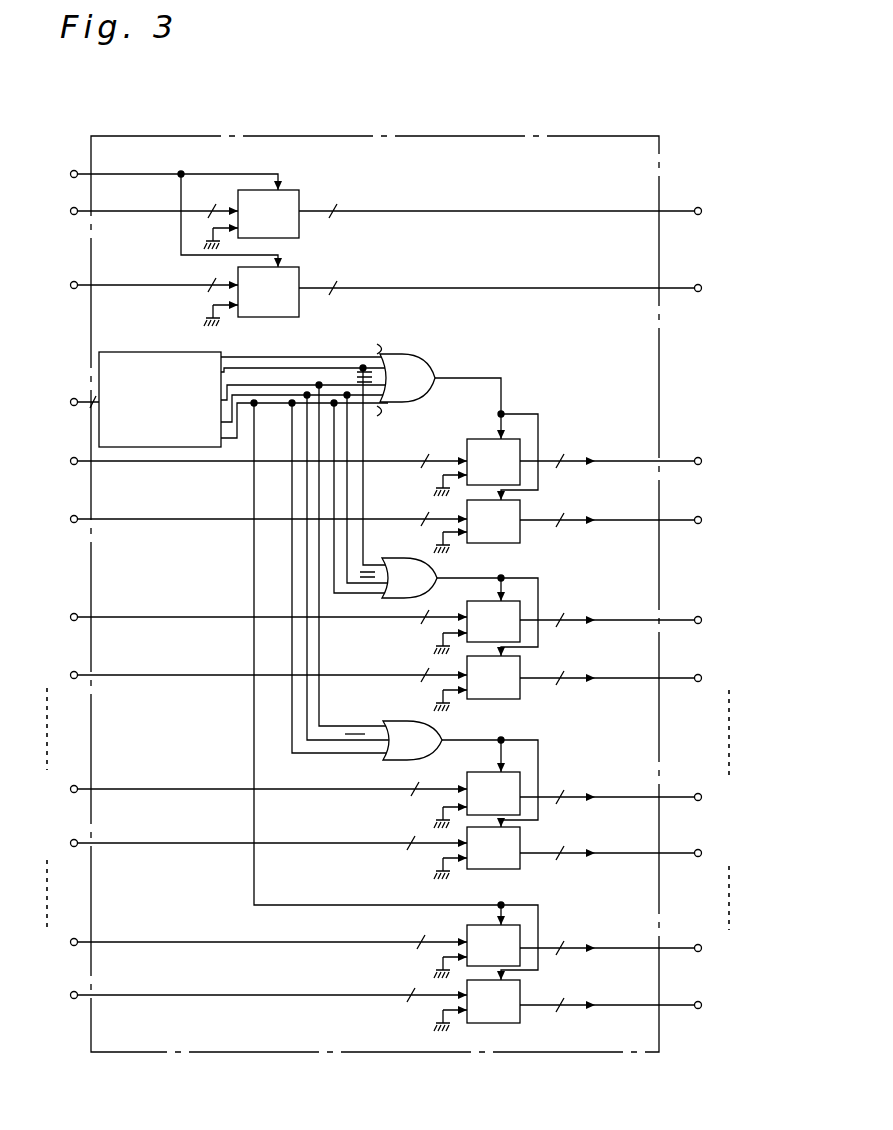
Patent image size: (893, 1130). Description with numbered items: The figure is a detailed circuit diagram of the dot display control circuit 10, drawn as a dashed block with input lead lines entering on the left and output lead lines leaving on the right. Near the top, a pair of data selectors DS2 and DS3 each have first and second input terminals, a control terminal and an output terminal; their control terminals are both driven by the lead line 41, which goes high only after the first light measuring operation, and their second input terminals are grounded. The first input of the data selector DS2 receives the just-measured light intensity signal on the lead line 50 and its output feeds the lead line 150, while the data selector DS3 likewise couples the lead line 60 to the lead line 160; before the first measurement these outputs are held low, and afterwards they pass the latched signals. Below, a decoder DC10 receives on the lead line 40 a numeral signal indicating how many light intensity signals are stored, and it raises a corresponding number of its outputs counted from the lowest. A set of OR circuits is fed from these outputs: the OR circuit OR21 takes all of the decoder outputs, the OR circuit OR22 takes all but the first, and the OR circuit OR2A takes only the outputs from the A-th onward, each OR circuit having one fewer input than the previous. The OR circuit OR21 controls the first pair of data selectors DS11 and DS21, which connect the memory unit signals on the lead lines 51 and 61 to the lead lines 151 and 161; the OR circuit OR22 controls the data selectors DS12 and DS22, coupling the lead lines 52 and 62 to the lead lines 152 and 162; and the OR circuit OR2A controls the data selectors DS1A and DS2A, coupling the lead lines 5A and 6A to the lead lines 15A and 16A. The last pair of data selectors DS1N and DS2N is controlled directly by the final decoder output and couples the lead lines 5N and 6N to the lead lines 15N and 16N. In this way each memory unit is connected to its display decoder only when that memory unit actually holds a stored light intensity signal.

The dot display control circuit 10 is at (502, 135).
The lead line 40 is at (63, 402).
The lead line 41 is at (154, 212).
The lead line 50 is at (132, 211).
The lead line 60 is at (132, 285).
The lead line 51 is at (247, 461).
The lead line 61 is at (247, 519).
The lead line 52 is at (247, 617).
The lead line 62 is at (247, 675).
The lead line 5A is at (247, 789).
The lead line 6A is at (247, 843).
The lead line 5N is at (247, 942).
The lead line 6N is at (247, 995).
The lead line 150 is at (531, 212).
The lead line 160 is at (531, 289).
The lead line 151 is at (642, 461).
The lead line 161 is at (642, 520).
The lead line 152 is at (642, 620).
The lead line 162 is at (642, 678).
The lead line 15A is at (643, 797).
The lead line 16A is at (643, 853).
The lead line 15N is at (644, 948).
The lead line 16N is at (644, 1005).
The decoder DC10 is at (300, 628).
The OR circuit OR21 is at (447, 422).
The OR circuit OR22 is at (449, 607).
The OR circuit OR2A is at (441, 774).
The data selector DS2 is at (294, 193).
The data selector DS3 is at (294, 270).
The data selector DS11 is at (517, 445).
The data selector DS21 is at (517, 510).
The data selector DS12 is at (517, 607).
The data selector DS22 is at (517, 665).
The data selector DS1A is at (517, 780).
The data selector DS2A is at (517, 838).
The data selector DS1N is at (517, 935).
The data selector DS2N is at (517, 990).